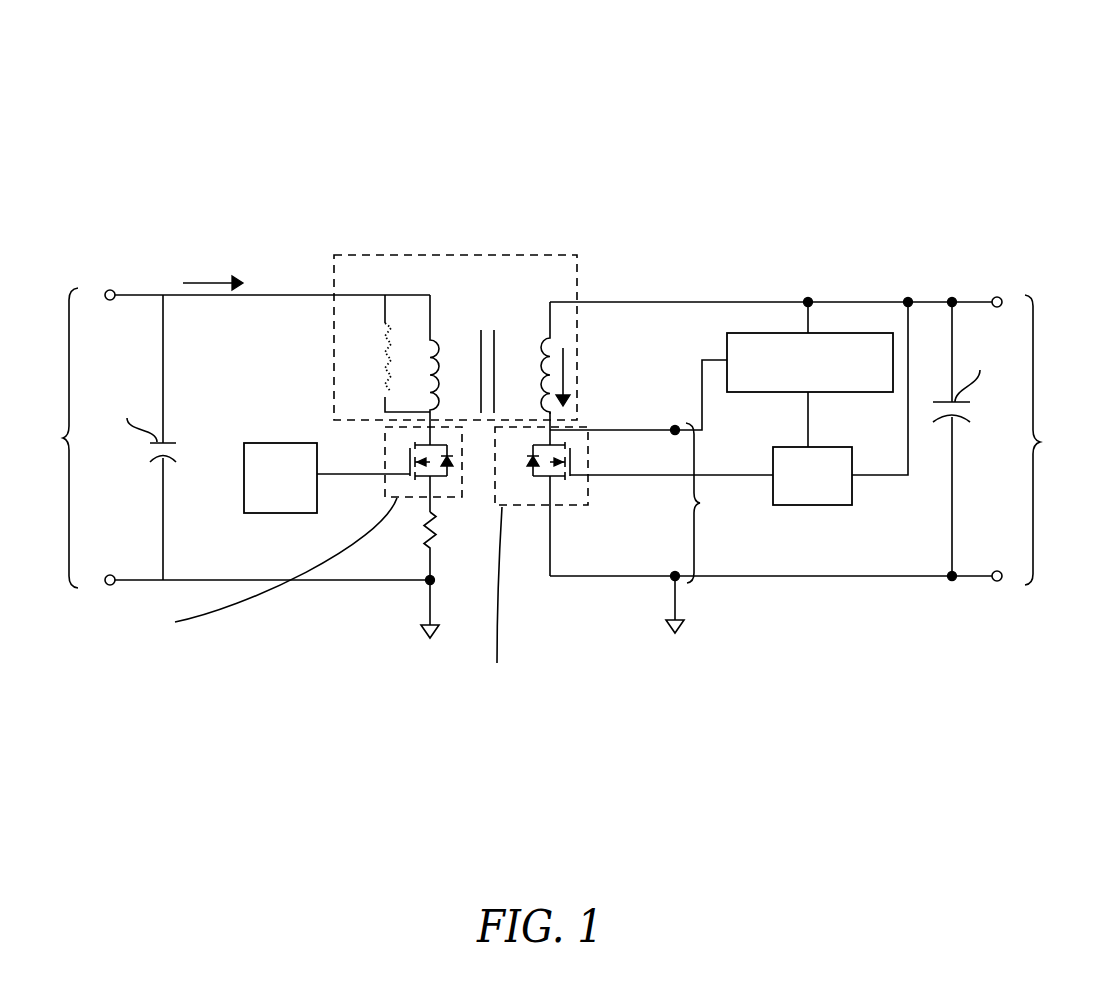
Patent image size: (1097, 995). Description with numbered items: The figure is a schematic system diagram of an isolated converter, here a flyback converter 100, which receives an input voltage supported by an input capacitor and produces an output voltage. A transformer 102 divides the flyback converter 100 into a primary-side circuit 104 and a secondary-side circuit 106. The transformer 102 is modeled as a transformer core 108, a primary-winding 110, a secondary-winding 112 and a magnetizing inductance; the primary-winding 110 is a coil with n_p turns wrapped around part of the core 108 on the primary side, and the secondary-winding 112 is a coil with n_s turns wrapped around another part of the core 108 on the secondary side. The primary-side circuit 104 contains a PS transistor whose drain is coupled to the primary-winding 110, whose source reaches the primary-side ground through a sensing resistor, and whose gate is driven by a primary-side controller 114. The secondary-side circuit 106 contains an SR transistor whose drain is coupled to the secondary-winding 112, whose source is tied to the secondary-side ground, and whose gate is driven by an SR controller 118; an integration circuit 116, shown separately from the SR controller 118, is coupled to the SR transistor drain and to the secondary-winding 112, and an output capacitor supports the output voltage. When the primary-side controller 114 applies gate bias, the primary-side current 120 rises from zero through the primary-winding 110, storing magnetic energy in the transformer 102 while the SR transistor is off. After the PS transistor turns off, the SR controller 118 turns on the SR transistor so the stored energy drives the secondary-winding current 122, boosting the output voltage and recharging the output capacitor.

The flyback converter 100 is at (770, 52).
The transformer 102 is at (402, 253).
The primary-side circuit 104 is at (423, 705).
The secondary-side circuit 106 is at (692, 705).
The transformer core 108 is at (487, 330).
The primary-winding 110 is at (437, 347).
The secondary-winding 112 is at (543, 357).
The primary-side controller 114 is at (280, 478).
The integration circuit 116 is at (810, 362).
The SR controller 118 is at (812, 476).
The primary-side current 120 is at (202, 280).
The secondary-winding current 122 is at (575, 363).